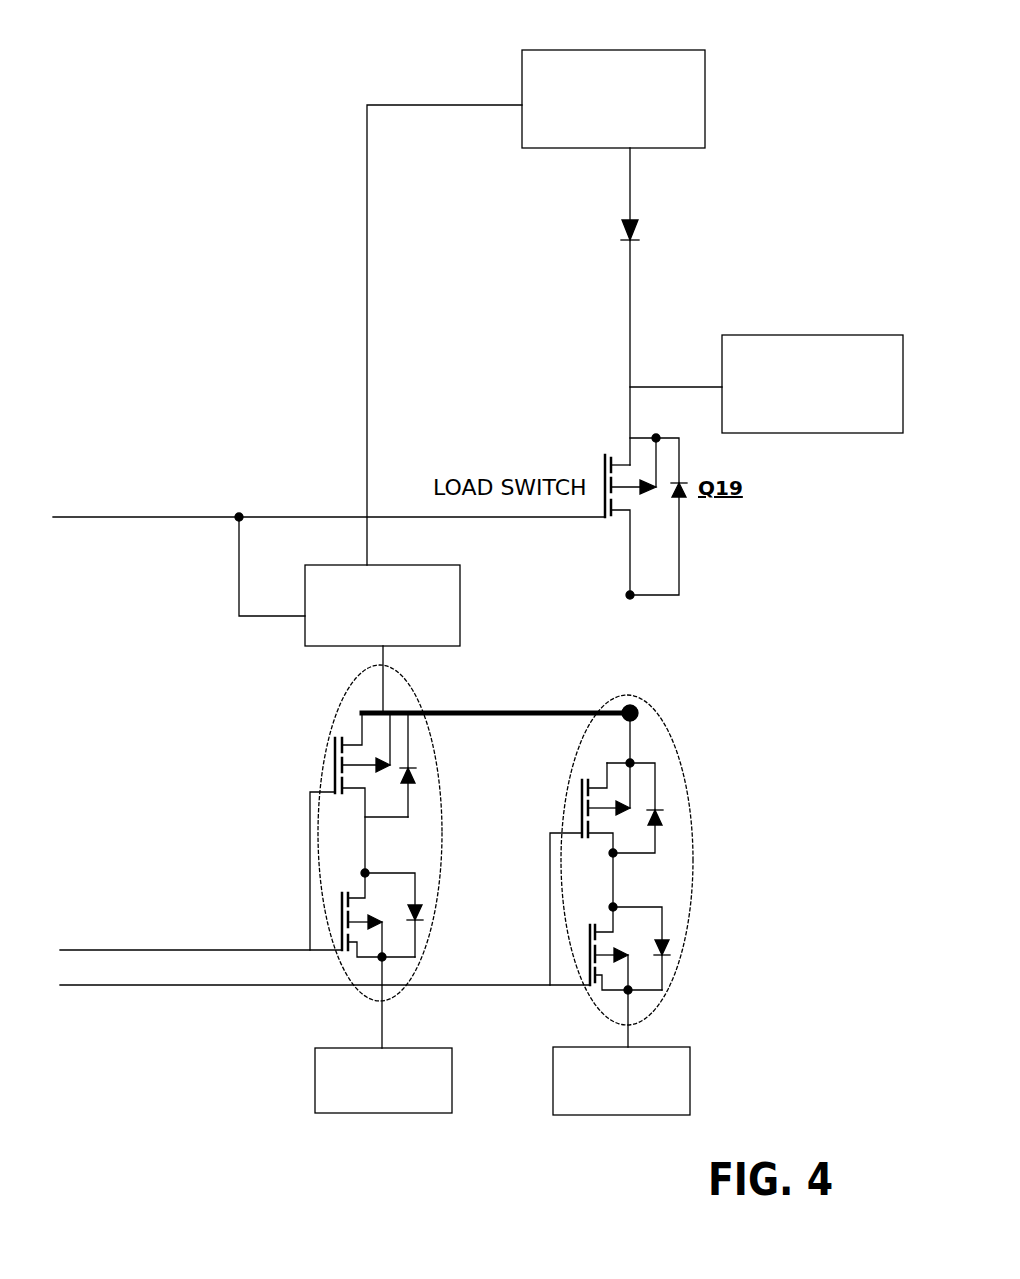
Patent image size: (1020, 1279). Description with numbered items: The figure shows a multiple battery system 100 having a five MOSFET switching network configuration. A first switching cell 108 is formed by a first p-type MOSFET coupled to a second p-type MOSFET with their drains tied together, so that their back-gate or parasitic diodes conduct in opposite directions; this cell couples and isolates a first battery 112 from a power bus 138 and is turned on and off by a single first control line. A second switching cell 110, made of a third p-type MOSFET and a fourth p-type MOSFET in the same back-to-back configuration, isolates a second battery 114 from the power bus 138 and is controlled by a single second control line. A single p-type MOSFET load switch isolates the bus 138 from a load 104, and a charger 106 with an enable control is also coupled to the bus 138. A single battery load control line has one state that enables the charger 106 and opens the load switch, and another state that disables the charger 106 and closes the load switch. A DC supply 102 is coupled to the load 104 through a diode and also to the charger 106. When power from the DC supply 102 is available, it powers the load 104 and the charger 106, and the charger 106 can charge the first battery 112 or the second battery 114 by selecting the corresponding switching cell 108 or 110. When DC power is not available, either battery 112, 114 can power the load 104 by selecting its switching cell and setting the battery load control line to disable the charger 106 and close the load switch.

The multiple battery system 100 is at (212, 157).
The DC supply 102 is at (636, 50).
The load 104 is at (811, 335).
The charger 106 is at (428, 565).
The first switching cell 108 is at (260, 838).
The second switching cell 110 is at (558, 758).
The first battery 112 is at (430, 1048).
The second battery 114 is at (680, 1047).
The power bus 138 is at (515, 688).